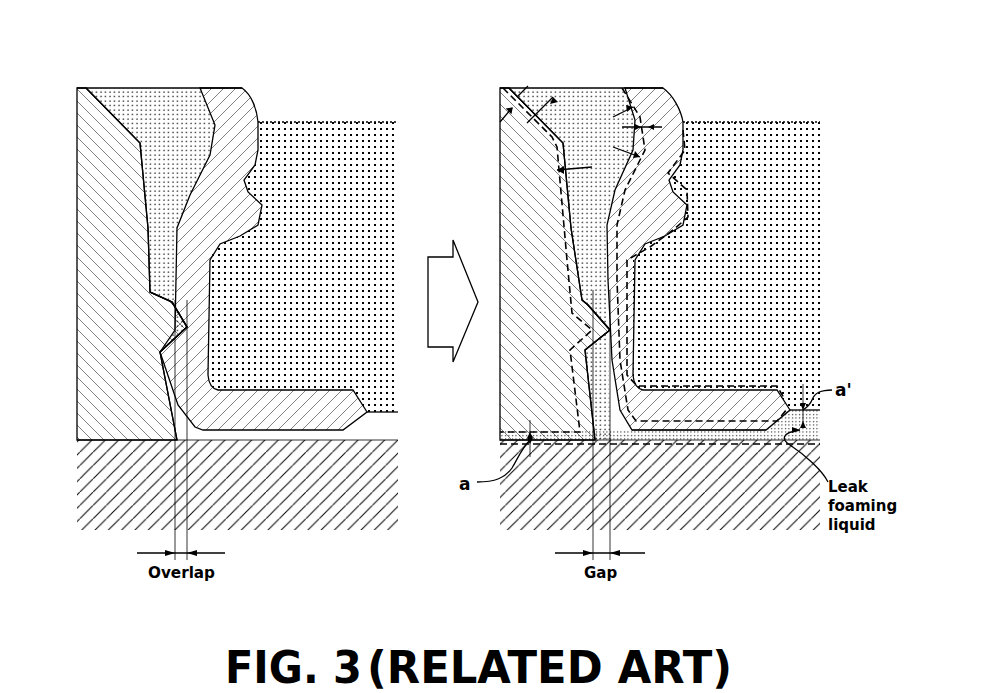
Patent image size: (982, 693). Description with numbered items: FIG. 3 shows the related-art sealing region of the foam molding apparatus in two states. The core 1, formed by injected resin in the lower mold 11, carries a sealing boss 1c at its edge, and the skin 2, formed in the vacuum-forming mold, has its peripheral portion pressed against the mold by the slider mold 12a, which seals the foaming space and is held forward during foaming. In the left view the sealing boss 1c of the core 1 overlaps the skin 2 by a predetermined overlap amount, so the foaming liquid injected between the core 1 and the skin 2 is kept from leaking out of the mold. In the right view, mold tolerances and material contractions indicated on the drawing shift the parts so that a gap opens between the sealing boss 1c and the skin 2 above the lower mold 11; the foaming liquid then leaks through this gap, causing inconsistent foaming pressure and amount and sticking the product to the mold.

The core 1 is at (108, 133).
The sealing boss 1c is at (173, 320).
The skin 2 is at (240, 113).
The slider mold 12a is at (330, 133).
The lower mold 11 is at (318, 503).